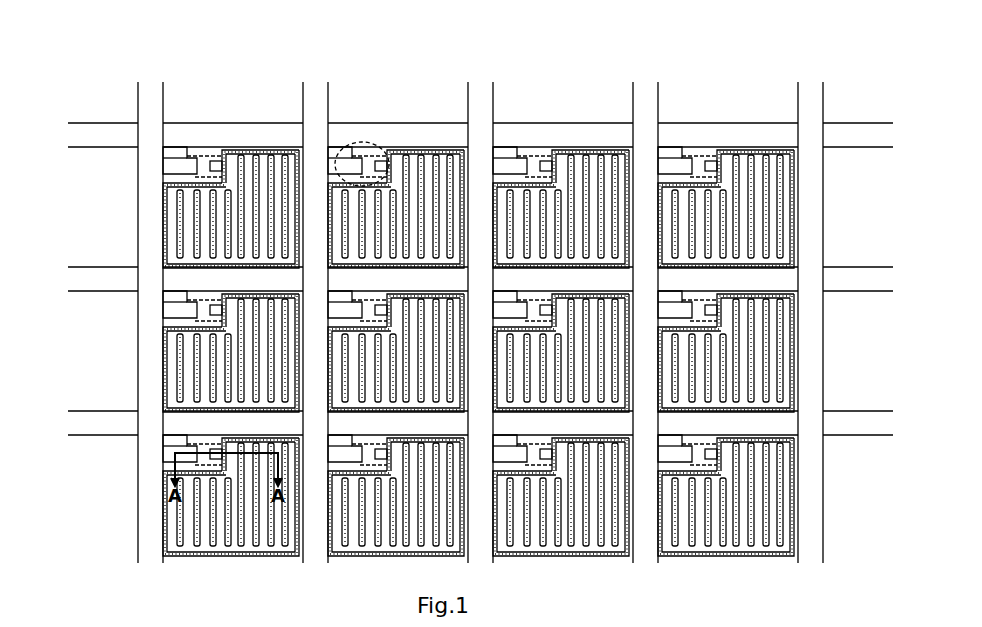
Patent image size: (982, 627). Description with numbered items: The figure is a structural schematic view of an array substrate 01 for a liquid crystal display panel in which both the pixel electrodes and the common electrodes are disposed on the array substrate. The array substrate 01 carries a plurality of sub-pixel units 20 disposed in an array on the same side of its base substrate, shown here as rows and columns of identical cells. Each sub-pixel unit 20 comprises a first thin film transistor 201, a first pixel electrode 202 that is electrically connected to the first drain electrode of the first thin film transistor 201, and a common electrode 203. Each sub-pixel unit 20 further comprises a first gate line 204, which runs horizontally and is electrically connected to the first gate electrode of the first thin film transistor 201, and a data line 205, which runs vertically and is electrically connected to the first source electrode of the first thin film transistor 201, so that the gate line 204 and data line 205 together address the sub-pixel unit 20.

The array substrate 01 is at (107, 36).
The sub-pixel unit 20 is at (175, 154).
The first thin film transistor 201 is at (361, 143).
The first pixel electrode 202 is at (232, 150).
The common electrode 203 is at (270, 150).
The first gate line 204 is at (90, 135).
The data line 205 is at (197, 63).